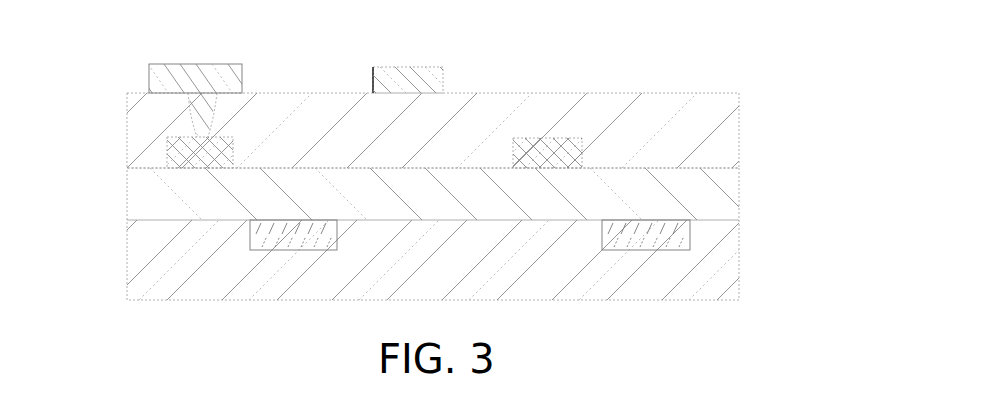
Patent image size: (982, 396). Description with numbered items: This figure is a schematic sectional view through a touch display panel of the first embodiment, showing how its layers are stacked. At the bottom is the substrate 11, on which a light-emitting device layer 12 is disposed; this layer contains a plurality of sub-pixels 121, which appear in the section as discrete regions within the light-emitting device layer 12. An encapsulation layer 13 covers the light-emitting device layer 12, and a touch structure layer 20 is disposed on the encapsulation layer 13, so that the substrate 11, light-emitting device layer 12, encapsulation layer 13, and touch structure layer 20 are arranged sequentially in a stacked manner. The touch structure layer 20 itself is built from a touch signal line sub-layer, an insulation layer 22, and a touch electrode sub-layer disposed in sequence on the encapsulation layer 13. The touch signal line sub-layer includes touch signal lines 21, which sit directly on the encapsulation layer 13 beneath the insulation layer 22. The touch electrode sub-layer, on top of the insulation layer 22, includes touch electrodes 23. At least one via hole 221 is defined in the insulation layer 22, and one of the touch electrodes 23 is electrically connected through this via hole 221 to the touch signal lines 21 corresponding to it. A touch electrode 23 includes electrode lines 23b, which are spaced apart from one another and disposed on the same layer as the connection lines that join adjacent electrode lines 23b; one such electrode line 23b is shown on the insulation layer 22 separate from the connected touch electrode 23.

The substrate 11 is at (660, 272).
The light-emitting device layer 12 is at (693, 236).
The sub-pixels 121 is at (726, 235).
The encapsulation layer 13 is at (660, 200).
The touch structure layer 20 is at (68, 70).
The touch signal lines 21 is at (167, 155).
The insulation layer 22 is at (178, 117).
The via hole 221 is at (218, 105).
The touch electrodes 23 is at (150, 82).
The electrode lines 23b is at (413, 70).